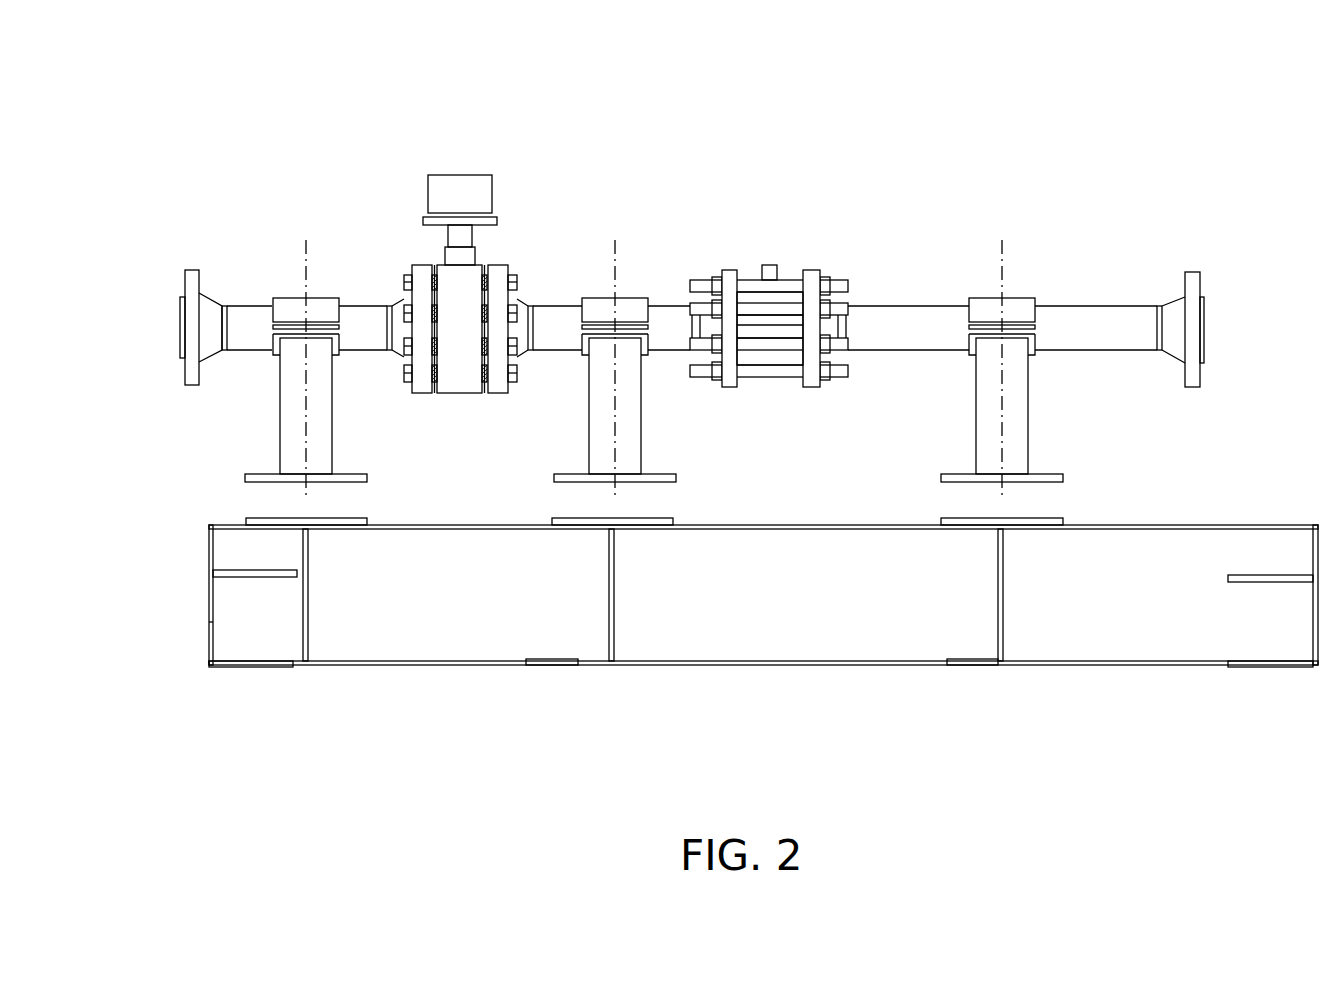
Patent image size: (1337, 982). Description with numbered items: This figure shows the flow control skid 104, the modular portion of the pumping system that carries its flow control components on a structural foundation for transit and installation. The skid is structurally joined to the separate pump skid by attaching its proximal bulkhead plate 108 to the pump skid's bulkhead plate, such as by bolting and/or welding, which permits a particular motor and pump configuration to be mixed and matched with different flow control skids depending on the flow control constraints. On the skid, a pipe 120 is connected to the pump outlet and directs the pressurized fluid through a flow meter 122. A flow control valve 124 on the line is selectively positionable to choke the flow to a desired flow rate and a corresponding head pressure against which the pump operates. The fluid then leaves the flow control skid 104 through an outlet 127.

The flow control skid 104 is at (556, 162).
The proximal bulkhead plate 108 is at (1321, 658).
The pipe 120 is at (1090, 305).
The flow meter 122 is at (748, 275).
The flow control valve 124 is at (423, 265).
The outlet 127 is at (178, 328).